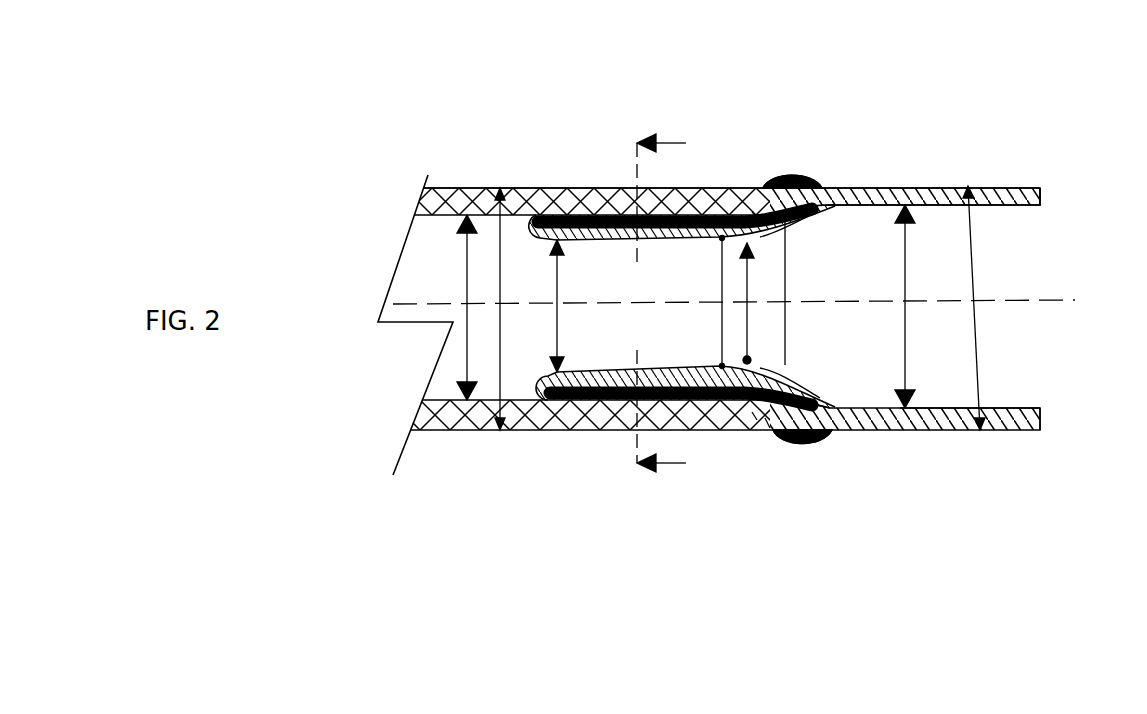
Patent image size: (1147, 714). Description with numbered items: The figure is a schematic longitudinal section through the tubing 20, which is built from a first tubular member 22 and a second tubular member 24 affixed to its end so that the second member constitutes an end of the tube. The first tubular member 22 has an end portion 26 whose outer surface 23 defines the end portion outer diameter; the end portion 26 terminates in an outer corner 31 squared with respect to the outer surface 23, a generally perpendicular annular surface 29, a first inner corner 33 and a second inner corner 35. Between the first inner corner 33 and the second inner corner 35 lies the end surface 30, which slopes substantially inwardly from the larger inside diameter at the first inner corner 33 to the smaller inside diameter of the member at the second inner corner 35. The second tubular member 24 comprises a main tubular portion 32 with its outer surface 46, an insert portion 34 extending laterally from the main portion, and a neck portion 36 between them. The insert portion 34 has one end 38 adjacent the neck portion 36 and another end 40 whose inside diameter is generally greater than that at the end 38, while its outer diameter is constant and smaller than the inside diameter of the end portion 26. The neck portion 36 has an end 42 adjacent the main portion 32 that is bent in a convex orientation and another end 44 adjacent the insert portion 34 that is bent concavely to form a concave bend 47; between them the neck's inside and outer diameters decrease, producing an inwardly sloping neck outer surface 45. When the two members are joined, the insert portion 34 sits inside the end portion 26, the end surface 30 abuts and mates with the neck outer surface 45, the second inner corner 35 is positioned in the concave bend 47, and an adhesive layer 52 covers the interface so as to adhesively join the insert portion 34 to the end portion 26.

The tubing 20 is at (758, 287).
The first tubular member 22 is at (563, 188).
The outer surface 23 is at (760, 215).
The second tubular member 24 is at (945, 185).
The end portion 26 is at (703, 188).
The annular surface 29 is at (796, 181).
The end surface 30 is at (782, 436).
The outer corner 31 is at (790, 185).
The main tubular portion 32 is at (1032, 431).
The first inner corner 33 is at (866, 188).
The insert portion 34 is at (636, 372).
The second inner corner 35 is at (755, 214).
The neck portion 36 is at (792, 224).
The one end of insert portion 38 is at (752, 208).
The other end of insert portion 40 is at (525, 188).
The neck portion end 42 is at (822, 436).
The neck portion other end 44 is at (712, 376).
The neck outer surface 45 is at (768, 425).
The outer surface 46 is at (975, 431).
The concave bend 47 is at (750, 208).
The adhesive layer 52 is at (792, 184).